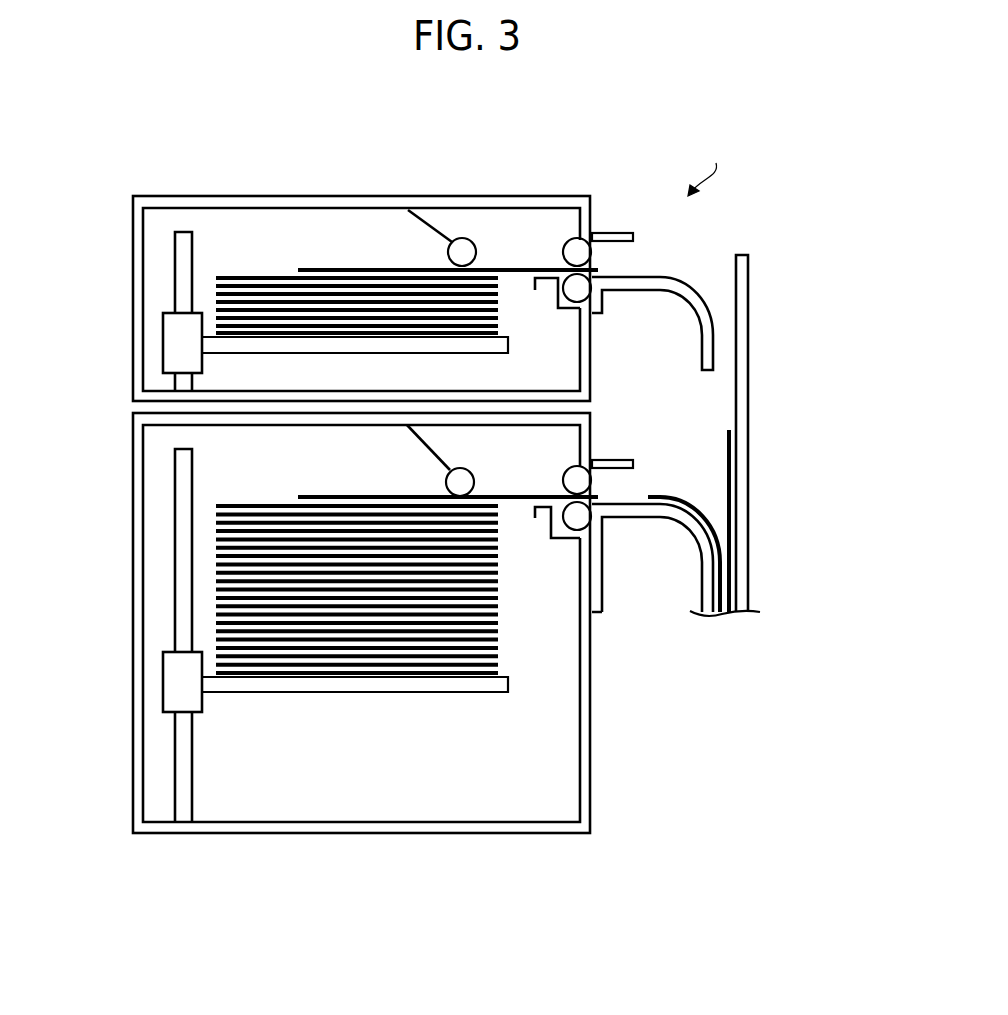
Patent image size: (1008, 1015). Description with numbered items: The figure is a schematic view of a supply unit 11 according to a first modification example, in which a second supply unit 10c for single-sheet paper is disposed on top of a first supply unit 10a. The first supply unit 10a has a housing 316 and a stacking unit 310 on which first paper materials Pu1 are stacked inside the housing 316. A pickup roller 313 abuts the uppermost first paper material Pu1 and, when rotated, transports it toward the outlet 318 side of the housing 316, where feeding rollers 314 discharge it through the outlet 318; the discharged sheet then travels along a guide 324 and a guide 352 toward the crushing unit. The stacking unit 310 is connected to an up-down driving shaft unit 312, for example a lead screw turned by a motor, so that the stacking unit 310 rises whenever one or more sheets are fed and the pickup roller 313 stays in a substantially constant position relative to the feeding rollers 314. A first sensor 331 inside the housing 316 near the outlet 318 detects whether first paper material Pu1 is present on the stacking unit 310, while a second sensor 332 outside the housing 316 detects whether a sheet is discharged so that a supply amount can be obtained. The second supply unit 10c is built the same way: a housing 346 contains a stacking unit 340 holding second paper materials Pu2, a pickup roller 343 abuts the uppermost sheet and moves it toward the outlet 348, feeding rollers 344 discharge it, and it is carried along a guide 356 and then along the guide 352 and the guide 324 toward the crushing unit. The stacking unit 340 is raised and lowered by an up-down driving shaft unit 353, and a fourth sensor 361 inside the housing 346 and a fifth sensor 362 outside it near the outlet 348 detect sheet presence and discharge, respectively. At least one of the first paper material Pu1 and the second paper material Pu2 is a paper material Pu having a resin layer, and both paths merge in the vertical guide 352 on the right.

The first supply unit 10a is at (122, 495).
The second supply unit 10c is at (120, 220).
The supply unit 11 is at (707, 166).
The stacking unit 310 is at (508, 688).
The up-down driving shaft unit 312 is at (186, 562).
The pickup roller 313 is at (462, 480).
The feeding rollers 314 is at (582, 528).
The housing 316 is at (138, 603).
The outlet 318 is at (592, 500).
The guide 324 is at (682, 522).
The first sensor 331 is at (538, 519).
The second sensor 332 is at (608, 460).
The stacking unit 340 is at (508, 348).
The pickup roller 343 is at (462, 250).
The feeding rollers 344 is at (577, 250).
The housing 346 is at (140, 318).
The outlet 348 is at (598, 272).
The guide 352 is at (740, 395).
The up-down driving shaft unit 353 is at (186, 268).
The guide 356 is at (686, 292).
The fourth sensor 361 is at (541, 290).
The fifth sensor 362 is at (610, 236).
The first paper material Pu1 is at (240, 506).
The second paper material Pu2 is at (262, 278).
The paper material Pu is at (737, 445).